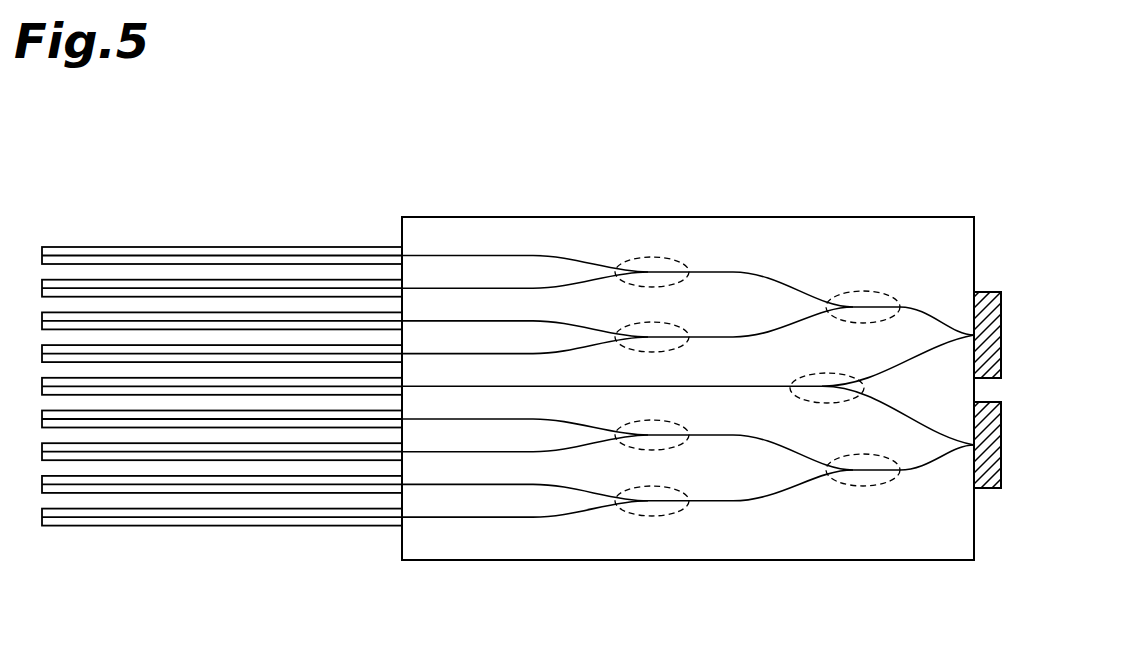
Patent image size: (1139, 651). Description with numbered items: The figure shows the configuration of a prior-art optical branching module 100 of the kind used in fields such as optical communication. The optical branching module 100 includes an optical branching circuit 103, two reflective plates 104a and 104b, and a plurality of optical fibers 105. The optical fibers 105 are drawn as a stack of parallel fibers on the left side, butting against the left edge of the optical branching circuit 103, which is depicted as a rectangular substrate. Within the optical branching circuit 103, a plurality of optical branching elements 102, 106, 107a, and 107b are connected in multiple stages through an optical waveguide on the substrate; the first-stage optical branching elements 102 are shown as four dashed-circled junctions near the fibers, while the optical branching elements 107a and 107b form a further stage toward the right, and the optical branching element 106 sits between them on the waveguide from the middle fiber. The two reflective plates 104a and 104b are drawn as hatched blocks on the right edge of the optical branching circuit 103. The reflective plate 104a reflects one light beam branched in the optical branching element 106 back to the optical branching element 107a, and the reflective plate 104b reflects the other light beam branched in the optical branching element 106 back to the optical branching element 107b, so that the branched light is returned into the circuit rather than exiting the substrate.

The optical branching module 100 is at (937, 122).
The optical branching element 102 is at (664, 259).
The optical branching circuit 103 is at (933, 562).
The reflective plate 104a is at (1001, 322).
The reflective plate 104b is at (1001, 438).
The optical fibers 105 is at (260, 246).
The optical branching element 106 is at (832, 374).
The optical branching element 107a is at (876, 291).
The optical branching element 107b is at (862, 487).